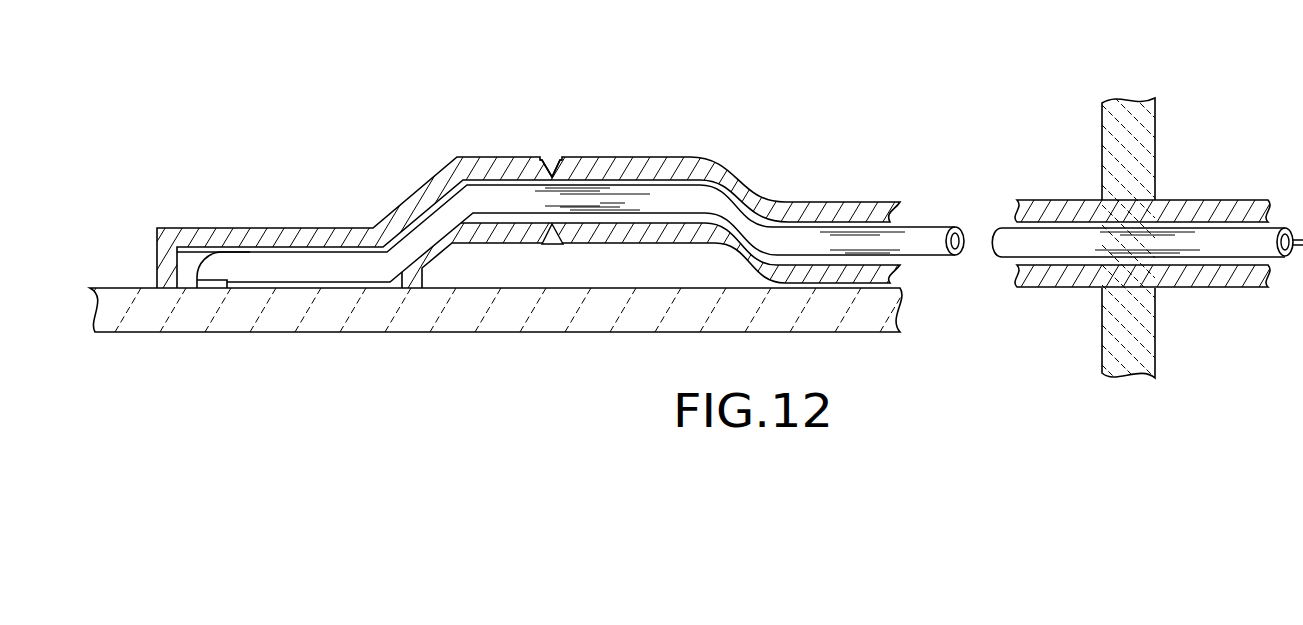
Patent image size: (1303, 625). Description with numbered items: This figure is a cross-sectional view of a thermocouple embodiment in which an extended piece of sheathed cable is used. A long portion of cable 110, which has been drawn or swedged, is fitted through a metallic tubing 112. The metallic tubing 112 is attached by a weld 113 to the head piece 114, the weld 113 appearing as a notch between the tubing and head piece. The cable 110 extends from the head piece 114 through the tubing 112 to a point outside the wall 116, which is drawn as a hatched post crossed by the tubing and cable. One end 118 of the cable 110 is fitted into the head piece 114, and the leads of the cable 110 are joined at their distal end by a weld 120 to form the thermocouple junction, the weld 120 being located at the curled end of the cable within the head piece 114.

The cable 110 is at (993, 228).
The metallic tubing 112 is at (623, 157).
The weld 113 is at (552, 160).
The head piece 114 is at (353, 227).
The wall 116 is at (1153, 152).
The end of the cable 118 is at (301, 268).
The weld 120 is at (200, 263).